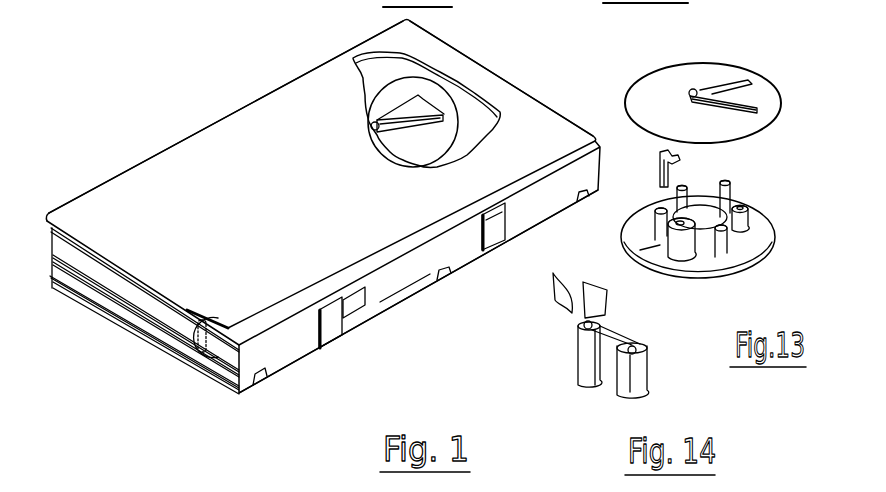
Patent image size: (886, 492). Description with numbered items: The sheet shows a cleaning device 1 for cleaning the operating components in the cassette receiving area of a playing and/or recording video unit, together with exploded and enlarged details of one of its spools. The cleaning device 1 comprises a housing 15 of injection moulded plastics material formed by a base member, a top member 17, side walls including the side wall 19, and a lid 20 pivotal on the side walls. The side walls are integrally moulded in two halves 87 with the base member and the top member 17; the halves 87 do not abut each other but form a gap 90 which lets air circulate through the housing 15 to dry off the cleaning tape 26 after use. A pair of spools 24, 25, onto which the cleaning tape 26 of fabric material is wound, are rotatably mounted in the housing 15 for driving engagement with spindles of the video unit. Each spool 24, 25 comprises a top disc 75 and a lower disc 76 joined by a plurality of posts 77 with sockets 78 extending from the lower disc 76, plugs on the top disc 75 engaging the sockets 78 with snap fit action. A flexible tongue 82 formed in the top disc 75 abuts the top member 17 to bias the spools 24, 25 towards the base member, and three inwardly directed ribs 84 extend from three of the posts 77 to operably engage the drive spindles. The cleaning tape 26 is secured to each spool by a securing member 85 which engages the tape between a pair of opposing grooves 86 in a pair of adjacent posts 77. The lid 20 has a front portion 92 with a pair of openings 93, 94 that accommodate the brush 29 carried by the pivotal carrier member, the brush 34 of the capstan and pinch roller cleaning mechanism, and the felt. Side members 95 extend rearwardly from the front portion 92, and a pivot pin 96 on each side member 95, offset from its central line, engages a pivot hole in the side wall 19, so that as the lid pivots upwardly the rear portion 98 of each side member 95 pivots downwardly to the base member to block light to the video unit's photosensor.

In FIG. 1, the cleaning device 1 is at (170, 403).
In FIG. 1, the housing 15 is at (280, 72).
In FIG. 1, the top member 17 is at (261, 112).
In FIG. 1, the side wall 19 is at (147, 325).
In FIG. 1, the lid 20 is at (432, 286).
In FIG. 13, the spool 24 is at (742, 165).
In FIG. 1, the spool 25 is at (380, 108).
In FIG. 14, the cleaning tape 26 is at (567, 302).
In FIG. 1, the brush 29 is at (498, 235).
In FIG. 1, the brush 34 is at (330, 340).
In FIG. 1, the top disc 75 is at (397, 93).
In FIG. 13, the top disc 75 is at (720, 52).
In FIG. 13, the lower disc 76 is at (743, 255).
In FIG. 13, the post 77 is at (755, 228).
In FIG. 14, the post 77 is at (632, 385).
In FIG. 13, the socket 78 is at (730, 183).
In FIG. 14, the socket 78 is at (645, 373).
In FIG. 1, the flexible tongue 82 is at (408, 117).
In FIG. 13, the flexible tongue 82 is at (748, 98).
In FIG. 13, the inwardly directed rib 84 is at (690, 190).
In FIG. 13, the securing member 85 is at (658, 162).
In FIG. 14, the securing member 85 is at (608, 377).
In FIG. 13, the groove 86 is at (655, 229).
In FIG. 14, the groove 86 is at (585, 336).
In FIG. 1, the half 87 is at (90, 247).
In FIG. 1, the gap 90 is at (116, 297).
In FIG. 1, the front portion 92 is at (422, 290).
In FIG. 1, the opening 93 is at (490, 250).
In FIG. 1, the opening 94 is at (335, 343).
In FIG. 1, the side member 95 is at (227, 363).
In FIG. 1, the pivot pin 96 is at (212, 333).
In FIG. 1, the rear portion 98 is at (190, 335).